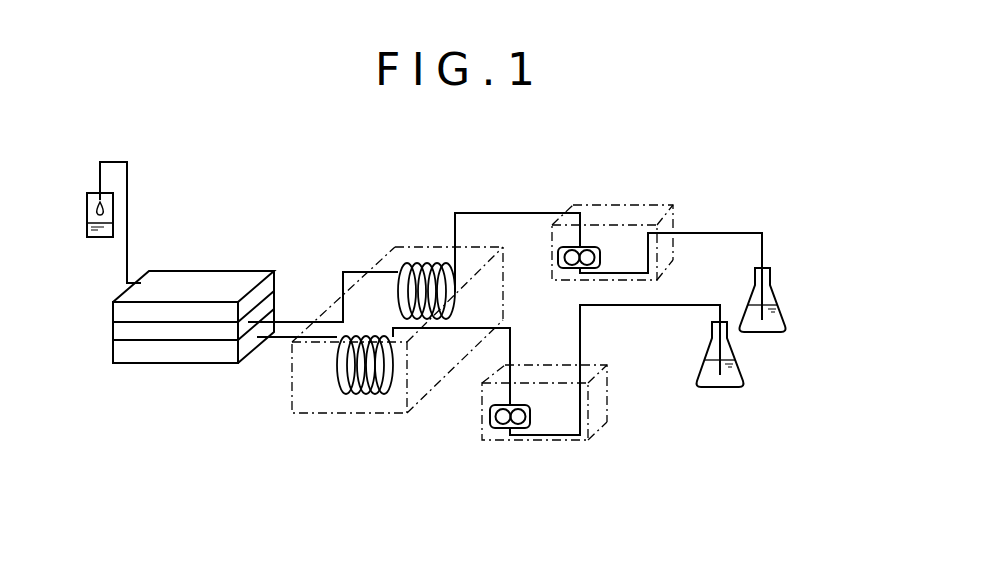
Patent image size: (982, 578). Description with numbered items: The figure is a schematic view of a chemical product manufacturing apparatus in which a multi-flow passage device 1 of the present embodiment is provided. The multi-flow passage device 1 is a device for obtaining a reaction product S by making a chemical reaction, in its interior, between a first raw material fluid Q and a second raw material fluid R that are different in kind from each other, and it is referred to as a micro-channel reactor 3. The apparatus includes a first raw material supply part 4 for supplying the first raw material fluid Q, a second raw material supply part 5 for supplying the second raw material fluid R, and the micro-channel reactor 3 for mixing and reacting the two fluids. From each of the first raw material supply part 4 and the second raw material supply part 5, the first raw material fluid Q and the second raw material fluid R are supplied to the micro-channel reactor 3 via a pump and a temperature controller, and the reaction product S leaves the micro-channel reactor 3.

The multi-flow passage device 1 is at (193, 264).
The micro-channel reactor 3 is at (221, 238).
The first raw material supply part 4 is at (777, 321).
The second raw material supply part 5 is at (735, 377).
The reaction product S is at (210, 204).
The first raw material fluid Q is at (679, 236).
The second raw material fluid R is at (651, 383).